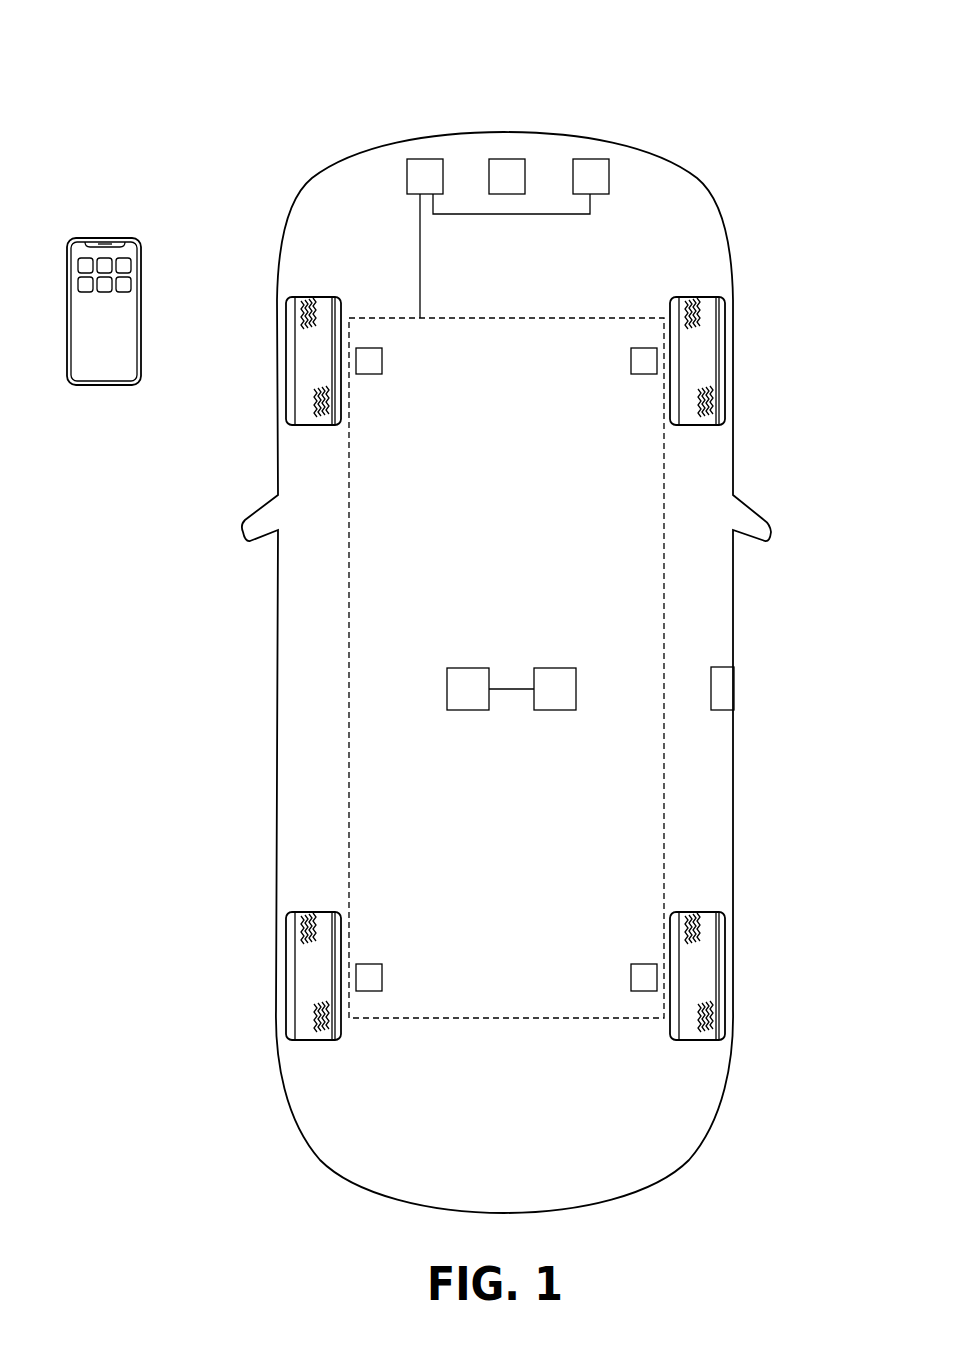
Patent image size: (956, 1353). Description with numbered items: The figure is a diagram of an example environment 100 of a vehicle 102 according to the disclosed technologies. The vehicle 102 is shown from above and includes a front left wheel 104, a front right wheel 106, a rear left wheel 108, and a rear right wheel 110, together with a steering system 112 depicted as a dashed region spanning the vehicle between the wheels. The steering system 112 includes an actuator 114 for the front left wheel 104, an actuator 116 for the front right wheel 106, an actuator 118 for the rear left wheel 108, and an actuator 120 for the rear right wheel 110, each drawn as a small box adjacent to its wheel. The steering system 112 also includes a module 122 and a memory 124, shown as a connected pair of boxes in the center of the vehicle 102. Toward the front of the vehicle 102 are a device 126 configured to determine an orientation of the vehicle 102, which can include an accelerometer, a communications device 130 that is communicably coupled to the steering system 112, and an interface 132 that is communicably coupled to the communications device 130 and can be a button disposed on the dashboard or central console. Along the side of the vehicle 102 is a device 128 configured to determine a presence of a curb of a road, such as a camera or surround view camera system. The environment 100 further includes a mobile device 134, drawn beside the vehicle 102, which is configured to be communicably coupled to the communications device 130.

The environment 100 is at (147, 24).
The vehicle 102 is at (743, 98).
The front left wheel 104 is at (302, 357).
The front right wheel 106 is at (710, 348).
The rear left wheel 108 is at (302, 989).
The rear right wheel 110 is at (710, 981).
The steering system 112 is at (349, 730).
The actuator 114 is at (367, 374).
The actuator 116 is at (640, 374).
The actuator 118 is at (367, 964).
The actuator 120 is at (643, 964).
The module 122 is at (468, 710).
The memory 124 is at (557, 710).
The device 126 is at (512, 158).
The device 128 is at (727, 680).
The communications device 130 is at (425, 158).
The interface 132 is at (593, 158).
The mobile device 134 is at (98, 238).